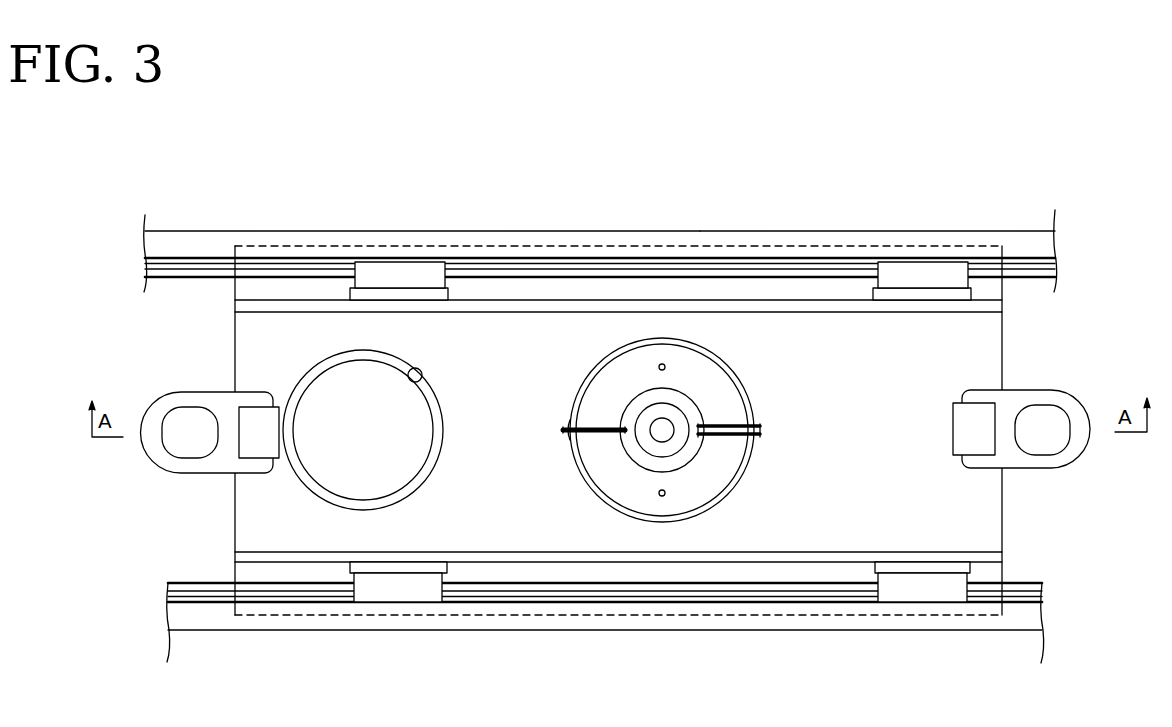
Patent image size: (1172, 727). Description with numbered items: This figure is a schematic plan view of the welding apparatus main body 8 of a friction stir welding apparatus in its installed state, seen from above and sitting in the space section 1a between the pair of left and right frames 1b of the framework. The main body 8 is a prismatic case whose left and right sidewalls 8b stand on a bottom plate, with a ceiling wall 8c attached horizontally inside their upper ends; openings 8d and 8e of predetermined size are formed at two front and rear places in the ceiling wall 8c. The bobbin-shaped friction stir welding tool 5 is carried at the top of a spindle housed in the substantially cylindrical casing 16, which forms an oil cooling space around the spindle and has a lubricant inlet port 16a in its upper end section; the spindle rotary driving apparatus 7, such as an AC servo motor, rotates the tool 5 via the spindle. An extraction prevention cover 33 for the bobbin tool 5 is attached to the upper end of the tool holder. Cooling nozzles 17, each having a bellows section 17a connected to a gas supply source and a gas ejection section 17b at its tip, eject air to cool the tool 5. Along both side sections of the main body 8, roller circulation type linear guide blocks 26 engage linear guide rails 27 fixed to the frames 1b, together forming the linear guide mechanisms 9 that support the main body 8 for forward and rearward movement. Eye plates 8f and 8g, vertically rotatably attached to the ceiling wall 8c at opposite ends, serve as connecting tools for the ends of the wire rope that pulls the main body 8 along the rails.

The space section 1a is at (192, 285).
The frame 1b is at (866, 218).
The linear guide rail 27 is at (1030, 255).
The linear guide mechanism 9 is at (420, 250).
The welding apparatus main body 8 is at (494, 293).
The sidewall 8b is at (853, 303).
The ceiling wall 8c is at (992, 337).
The linear guide block 26 is at (377, 270).
The eye plate 8f is at (152, 455).
The eye plate 8g is at (1073, 460).
The spindle rotary driving apparatus 7 is at (323, 383).
The opening 8e is at (422, 372).
The casing 16 is at (737, 405).
The extraction prevention cover 33 is at (697, 417).
The friction stir welding tool 5 is at (668, 422).
The lubricant inlet port 16a is at (660, 363).
The cooling nozzle 17 is at (595, 445).
The bellows section 17a is at (592, 420).
The gas ejection section 17b is at (628, 440).
The opening 8d is at (577, 417).